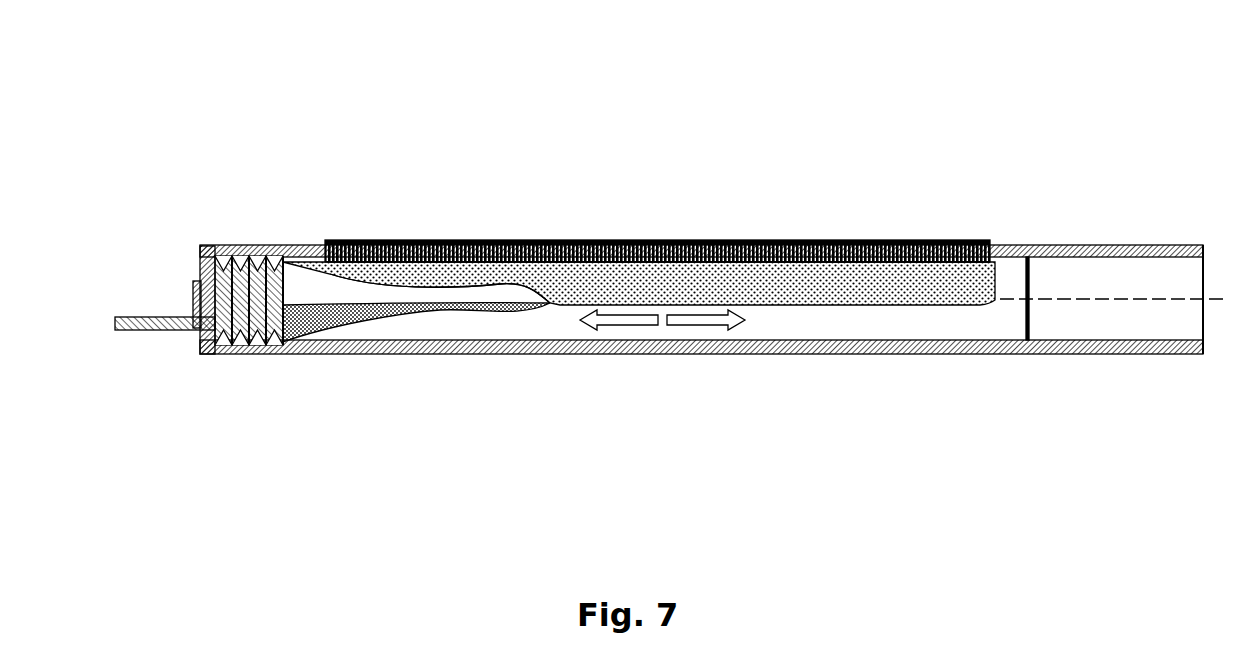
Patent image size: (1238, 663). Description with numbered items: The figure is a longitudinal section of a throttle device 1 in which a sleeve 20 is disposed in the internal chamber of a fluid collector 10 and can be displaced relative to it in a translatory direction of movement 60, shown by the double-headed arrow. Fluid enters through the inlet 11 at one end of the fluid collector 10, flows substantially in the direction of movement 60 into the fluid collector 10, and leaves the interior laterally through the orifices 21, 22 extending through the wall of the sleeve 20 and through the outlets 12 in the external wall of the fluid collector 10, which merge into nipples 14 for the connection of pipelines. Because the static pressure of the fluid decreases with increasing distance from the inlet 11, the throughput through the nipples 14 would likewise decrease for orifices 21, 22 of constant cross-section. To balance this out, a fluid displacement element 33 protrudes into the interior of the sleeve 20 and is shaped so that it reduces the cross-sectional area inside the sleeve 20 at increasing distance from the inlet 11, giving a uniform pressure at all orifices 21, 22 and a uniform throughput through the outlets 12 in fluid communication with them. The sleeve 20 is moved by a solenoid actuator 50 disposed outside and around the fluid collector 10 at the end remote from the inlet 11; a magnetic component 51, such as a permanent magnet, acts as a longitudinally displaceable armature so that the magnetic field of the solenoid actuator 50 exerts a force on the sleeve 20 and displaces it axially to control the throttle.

The throttle device 1 is at (847, 108).
The fluid collector 10 is at (1025, 245).
The inlet 11 is at (1183, 290).
The outlets 12 is at (899, 238).
The nipples 14 is at (693, 252).
The sleeve 20 is at (994, 315).
The orifice 21 is at (575, 252).
The orifice 22 is at (605, 262).
The fluid displacement element 33 is at (483, 290).
The solenoid actuator 50 is at (240, 355).
The magnetic component 51 is at (165, 331).
The direction of movement 60 is at (665, 332).